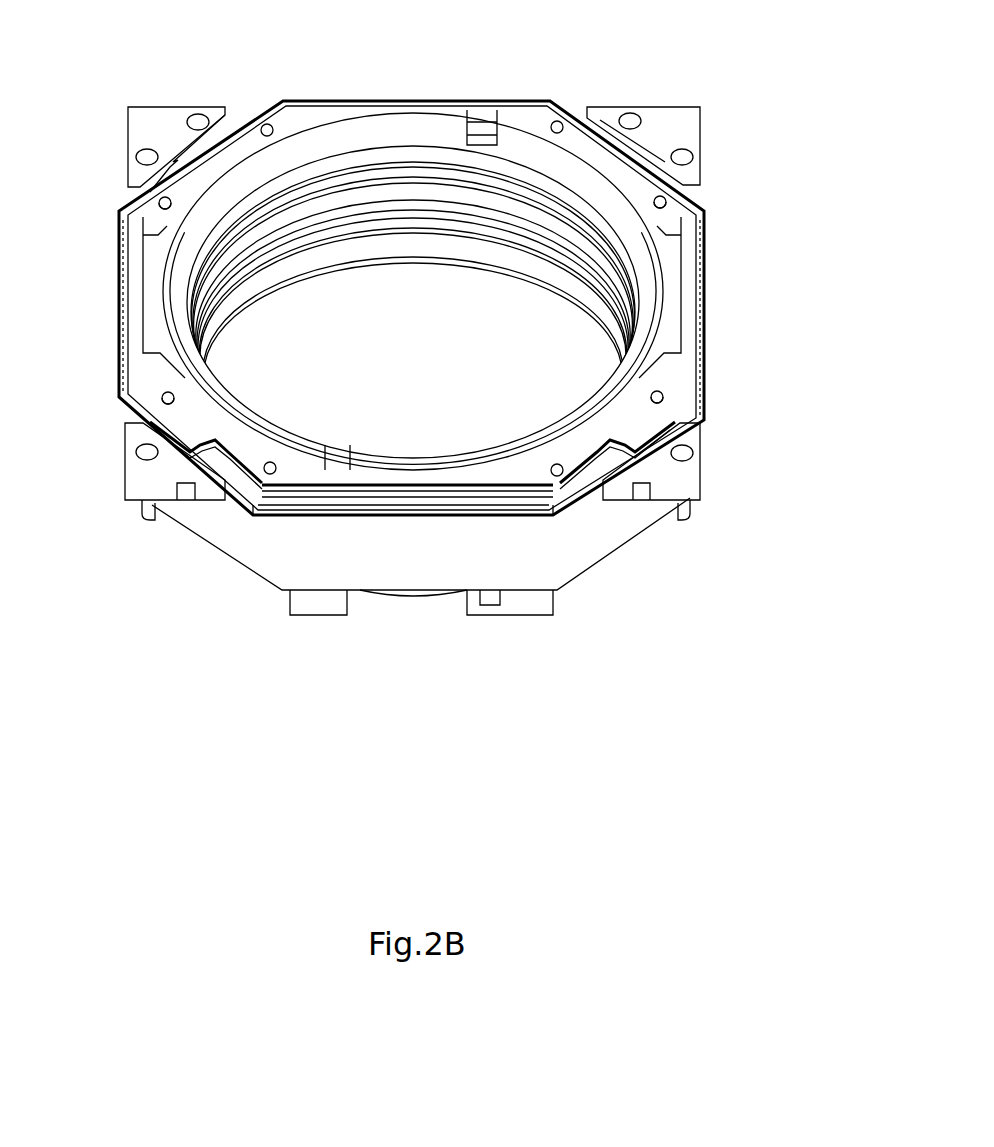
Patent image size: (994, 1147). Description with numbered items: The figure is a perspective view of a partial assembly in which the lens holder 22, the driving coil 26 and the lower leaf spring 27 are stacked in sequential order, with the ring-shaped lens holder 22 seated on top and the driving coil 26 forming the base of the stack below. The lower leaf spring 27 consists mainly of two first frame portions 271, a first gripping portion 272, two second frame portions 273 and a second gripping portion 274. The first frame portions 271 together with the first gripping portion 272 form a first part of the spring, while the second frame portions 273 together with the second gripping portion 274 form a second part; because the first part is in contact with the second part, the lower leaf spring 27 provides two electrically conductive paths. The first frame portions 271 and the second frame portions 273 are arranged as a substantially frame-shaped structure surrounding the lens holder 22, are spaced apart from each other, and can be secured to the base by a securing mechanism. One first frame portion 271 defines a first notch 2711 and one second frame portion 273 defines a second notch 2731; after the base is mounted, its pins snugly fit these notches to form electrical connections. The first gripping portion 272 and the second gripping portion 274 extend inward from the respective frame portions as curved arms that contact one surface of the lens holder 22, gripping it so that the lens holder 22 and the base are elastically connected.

The lower leaf spring 27 is at (653, 77).
The first frame portion 271 is at (135, 123).
The first notch 2711 is at (186, 502).
The first gripping portion 272 is at (150, 373).
The second frame portion 273 is at (688, 125).
The second notch 2731 is at (643, 502).
The second gripping portion 274 is at (152, 223).
The lens holder 22 is at (672, 305).
The driving coil 26 is at (590, 542).